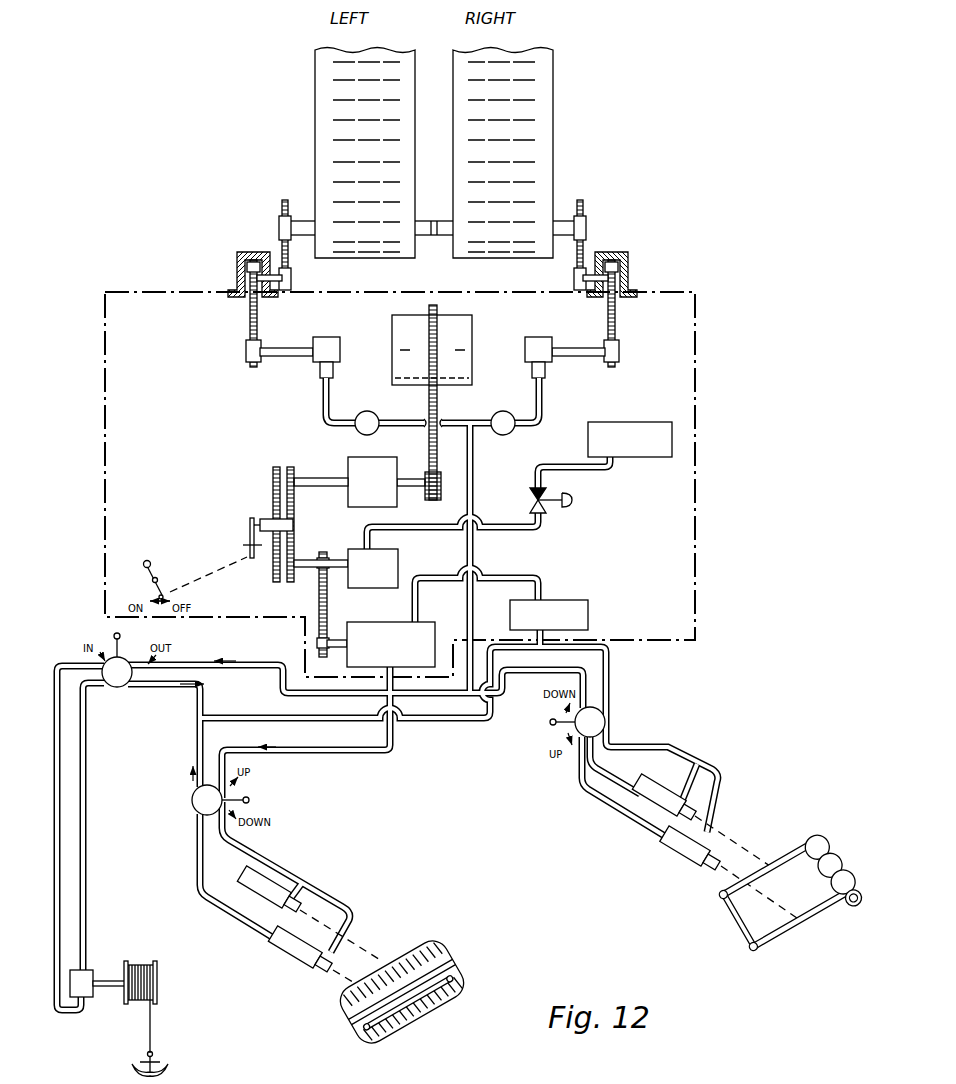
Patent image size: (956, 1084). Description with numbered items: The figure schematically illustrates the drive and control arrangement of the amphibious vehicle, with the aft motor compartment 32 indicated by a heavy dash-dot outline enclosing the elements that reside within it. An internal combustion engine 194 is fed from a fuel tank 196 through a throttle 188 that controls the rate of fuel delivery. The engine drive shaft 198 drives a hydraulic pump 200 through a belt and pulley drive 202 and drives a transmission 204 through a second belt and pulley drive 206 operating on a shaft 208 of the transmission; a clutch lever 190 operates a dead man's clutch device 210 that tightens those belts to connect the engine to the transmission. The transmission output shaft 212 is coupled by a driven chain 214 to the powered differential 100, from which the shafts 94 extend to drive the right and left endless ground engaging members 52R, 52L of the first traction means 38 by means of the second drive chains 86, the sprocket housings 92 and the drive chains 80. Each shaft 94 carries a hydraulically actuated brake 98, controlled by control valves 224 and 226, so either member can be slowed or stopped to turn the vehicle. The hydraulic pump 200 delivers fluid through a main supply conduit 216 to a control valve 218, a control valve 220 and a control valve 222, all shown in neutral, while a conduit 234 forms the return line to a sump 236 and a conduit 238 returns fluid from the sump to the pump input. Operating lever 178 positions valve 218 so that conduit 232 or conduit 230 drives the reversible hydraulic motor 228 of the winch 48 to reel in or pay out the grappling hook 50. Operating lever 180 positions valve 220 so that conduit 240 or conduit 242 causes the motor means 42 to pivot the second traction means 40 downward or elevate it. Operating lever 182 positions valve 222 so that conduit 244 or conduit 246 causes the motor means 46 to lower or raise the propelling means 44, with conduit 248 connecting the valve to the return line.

The aft motor compartment 32 is at (448, 484).
The first traction means 38 is at (587, 19).
The left endless ground engaging member 52L is at (302, 153).
The right endless ground engaging member 52R is at (547, 153).
The drive chain 80 is at (431, 245).
The housing 92 is at (426, 269).
The second drive chain 86 is at (429, 313).
The shaft 94 is at (432, 333).
The hydraulically actuated brake 98 is at (432, 341).
The powered differential 100 is at (455, 340).
The driven chain 214 is at (412, 402).
The output shaft 212 is at (419, 499).
The control valve 226 is at (359, 408).
The control valve 224 is at (515, 435).
The transmission 204 is at (351, 472).
The shaft of the transmission 208 is at (321, 494).
The second belt and pulley drive 206 is at (261, 509).
The clutch device 210 is at (249, 523).
The clutch lever 190 is at (180, 562).
The drive shaft 198 is at (330, 587).
The belt and pulley drive 202 is at (344, 618).
The internal combustion engine 194 is at (396, 565).
The hydraulic pump 200 is at (391, 632).
The fuel tank 196 is at (630, 422).
The throttle 188 is at (575, 495).
The conduit 238 is at (476, 567).
The sump 236 is at (573, 597).
The operating lever 178 is at (86, 633).
The conduit 230 is at (68, 818).
The conduit 232 is at (115, 826).
The control valve 218 is at (124, 677).
The conduit 244 is at (398, 761).
The control valve 220 is at (175, 801).
The operating lever 180 is at (266, 800).
The conduit 240 is at (198, 875).
The second conduit 242 is at (286, 877).
The main supply conduit 216 is at (334, 732).
The conduit 234 is at (355, 571).
The motor means 42 is at (326, 943).
The second traction means 40 is at (446, 991).
The winch 48 is at (125, 965).
The reversible hydraulic motor 228 is at (92, 1007).
The grappling hook 50 is at (169, 1038).
The operating lever 182 is at (541, 735).
The control valve 222 is at (629, 712).
The conduit 246 is at (654, 772).
The third conduit 248 is at (606, 686).
The motor means 46 is at (714, 838).
The propelling means 44 is at (792, 862).